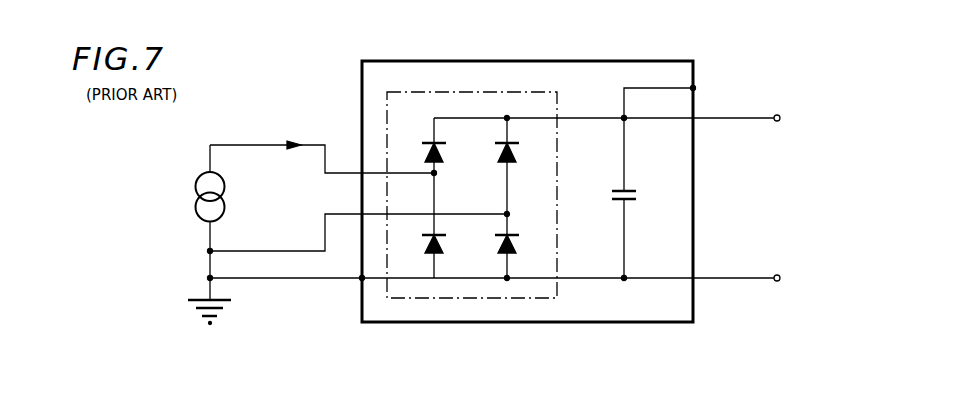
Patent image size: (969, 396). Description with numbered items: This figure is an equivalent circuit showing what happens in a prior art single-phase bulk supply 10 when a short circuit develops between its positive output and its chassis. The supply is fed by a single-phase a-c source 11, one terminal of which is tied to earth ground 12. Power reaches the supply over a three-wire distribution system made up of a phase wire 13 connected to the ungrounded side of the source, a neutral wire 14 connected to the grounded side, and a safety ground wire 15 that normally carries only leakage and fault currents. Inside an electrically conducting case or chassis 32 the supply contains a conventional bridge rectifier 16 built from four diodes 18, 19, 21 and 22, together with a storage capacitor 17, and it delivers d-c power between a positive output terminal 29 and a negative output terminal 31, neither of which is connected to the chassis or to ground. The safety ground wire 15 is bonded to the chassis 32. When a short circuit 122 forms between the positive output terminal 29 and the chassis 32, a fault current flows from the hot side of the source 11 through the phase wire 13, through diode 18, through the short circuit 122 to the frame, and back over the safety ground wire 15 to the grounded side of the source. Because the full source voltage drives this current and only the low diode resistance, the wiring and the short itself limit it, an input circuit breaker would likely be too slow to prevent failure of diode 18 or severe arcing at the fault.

The single-phase bulk supply 10 is at (699, 42).
The single-phase a-c source 11 is at (196, 183).
The earth ground 12 is at (196, 298).
The phase wire 13 is at (251, 143).
The neutral wire 14 is at (270, 245).
The safety ground wire 15 is at (283, 280).
The single-phase bridge rectifier 16 is at (493, 195).
The storage capacitor 17 is at (634, 192).
The diode 18 is at (446, 143).
The diode 19 is at (516, 143).
The diode 21 is at (440, 235).
The diode 22 is at (513, 235).
The positive output terminal 29 is at (779, 114).
The negative output terminal 31 is at (782, 274).
The case or chassis 32 is at (655, 59).
The short circuit 122 is at (621, 88).